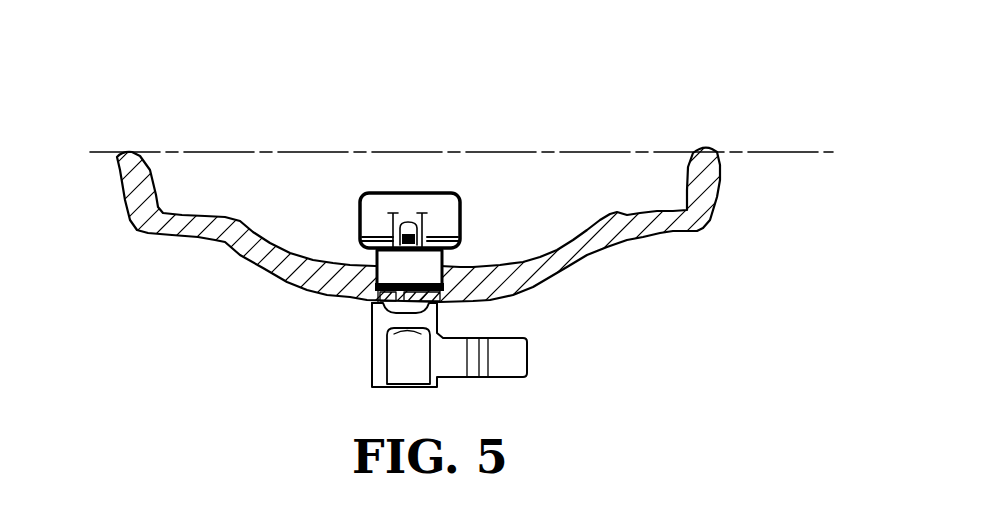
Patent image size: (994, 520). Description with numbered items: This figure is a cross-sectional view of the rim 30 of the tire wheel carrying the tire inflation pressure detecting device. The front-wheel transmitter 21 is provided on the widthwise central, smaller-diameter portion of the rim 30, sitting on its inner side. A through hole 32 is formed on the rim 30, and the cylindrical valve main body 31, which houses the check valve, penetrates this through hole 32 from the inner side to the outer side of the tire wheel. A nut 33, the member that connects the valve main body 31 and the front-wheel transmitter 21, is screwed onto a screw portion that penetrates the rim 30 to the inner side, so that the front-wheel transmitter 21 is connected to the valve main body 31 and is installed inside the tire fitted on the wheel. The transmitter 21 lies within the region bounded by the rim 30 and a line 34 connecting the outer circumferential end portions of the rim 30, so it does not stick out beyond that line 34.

The rim 30 is at (650, 212).
The line 34 is at (788, 152).
The front-wheel transmitter 21 is at (460, 220).
The nut 33 is at (393, 268).
The cylindrical valve main body 31 is at (442, 314).
The through hole 32 is at (385, 305).